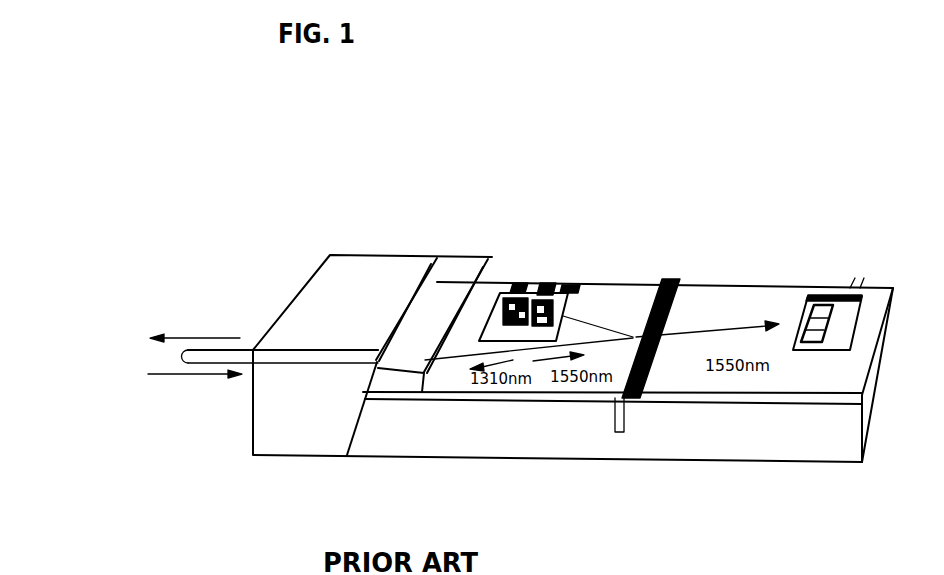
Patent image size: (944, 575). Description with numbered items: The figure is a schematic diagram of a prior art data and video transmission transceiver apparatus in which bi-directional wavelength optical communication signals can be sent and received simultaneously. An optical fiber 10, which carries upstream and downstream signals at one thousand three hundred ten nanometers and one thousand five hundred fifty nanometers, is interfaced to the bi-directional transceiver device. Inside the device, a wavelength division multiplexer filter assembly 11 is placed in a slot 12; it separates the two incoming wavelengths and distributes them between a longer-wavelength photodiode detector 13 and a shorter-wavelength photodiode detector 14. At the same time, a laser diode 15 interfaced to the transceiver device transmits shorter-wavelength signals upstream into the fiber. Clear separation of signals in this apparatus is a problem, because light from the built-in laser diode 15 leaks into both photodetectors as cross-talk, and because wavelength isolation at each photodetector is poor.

The optical fiber 10 is at (253, 350).
The wavelength division multiplexer (WDM) filter assembly 11 is at (632, 335).
The slot 12 is at (617, 427).
The 1550 nm photodiode detector 13 is at (808, 290).
The 1310 nm photodiode detector 14 is at (515, 285).
The 1310 nm laser diode 15 is at (573, 287).